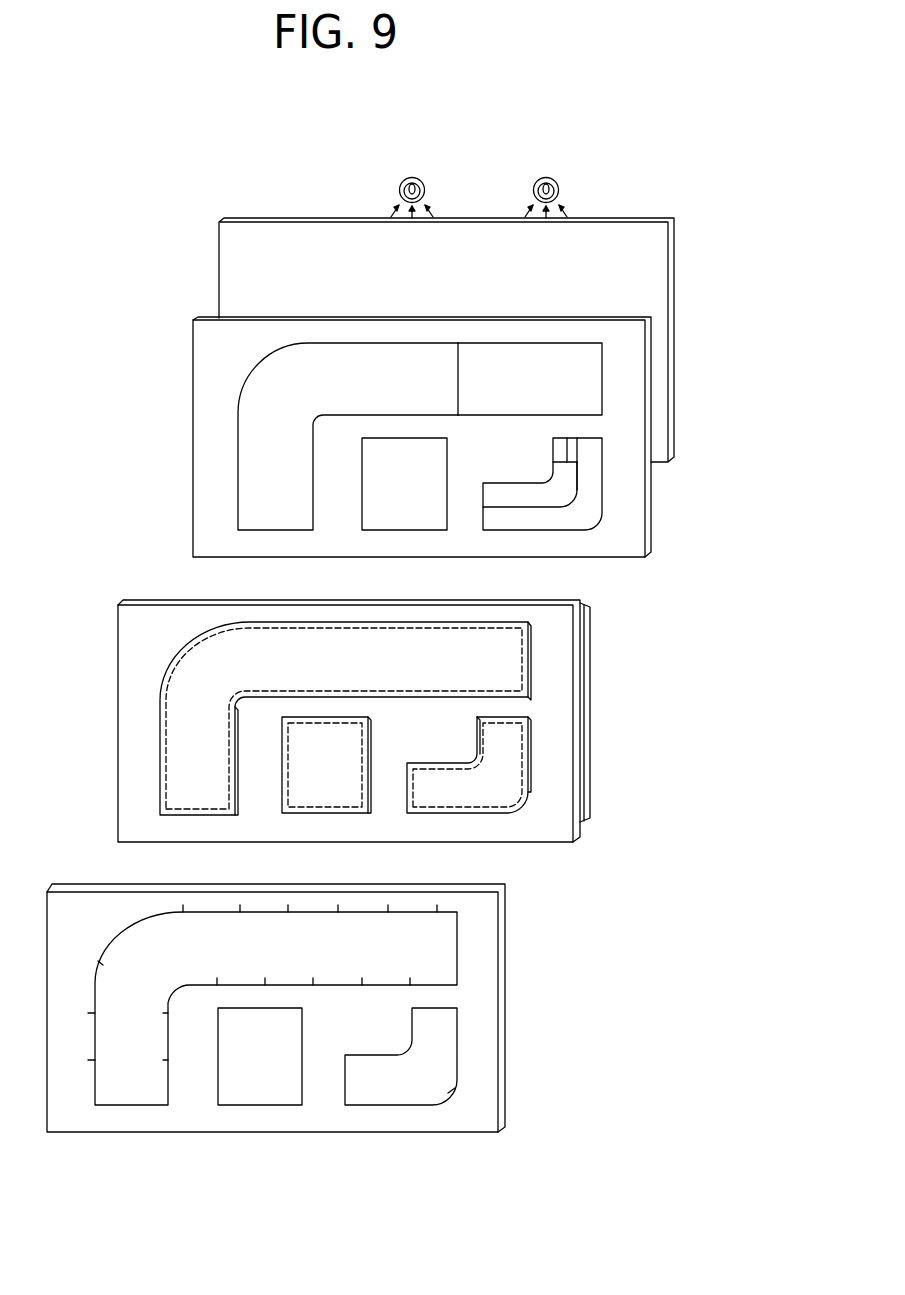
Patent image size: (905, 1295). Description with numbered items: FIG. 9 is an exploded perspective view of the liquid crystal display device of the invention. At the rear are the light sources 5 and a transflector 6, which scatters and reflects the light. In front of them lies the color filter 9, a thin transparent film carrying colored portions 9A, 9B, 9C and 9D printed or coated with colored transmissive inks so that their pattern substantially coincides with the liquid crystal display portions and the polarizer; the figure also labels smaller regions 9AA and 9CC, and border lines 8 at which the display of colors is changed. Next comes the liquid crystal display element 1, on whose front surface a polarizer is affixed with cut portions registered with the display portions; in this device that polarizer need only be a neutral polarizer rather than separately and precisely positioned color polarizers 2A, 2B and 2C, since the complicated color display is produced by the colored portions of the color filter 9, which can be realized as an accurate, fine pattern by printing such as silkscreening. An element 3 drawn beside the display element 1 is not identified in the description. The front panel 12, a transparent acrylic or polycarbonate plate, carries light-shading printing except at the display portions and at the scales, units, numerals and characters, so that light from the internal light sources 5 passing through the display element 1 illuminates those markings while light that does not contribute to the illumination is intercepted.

The liquid crystal display element 1 is at (580, 827).
The color polarizer 2A is at (197, 797).
The color polarizer 2B is at (320, 795).
The color polarizer 2C is at (445, 797).
The reflector plate 3 is at (591, 640).
The light source 5 is at (412, 178).
The transflector 6 is at (632, 219).
The border line 8 is at (458, 348).
The color filter 9 is at (651, 535).
The colored portion 9A is at (250, 521).
The sub opening 9AA is at (479, 398).
The colored portion 9B is at (384, 521).
The colored portion 9C is at (485, 490).
The sub opening 9CC is at (554, 456).
The colored portion 9D is at (533, 521).
The front panel 12 is at (467, 1133).